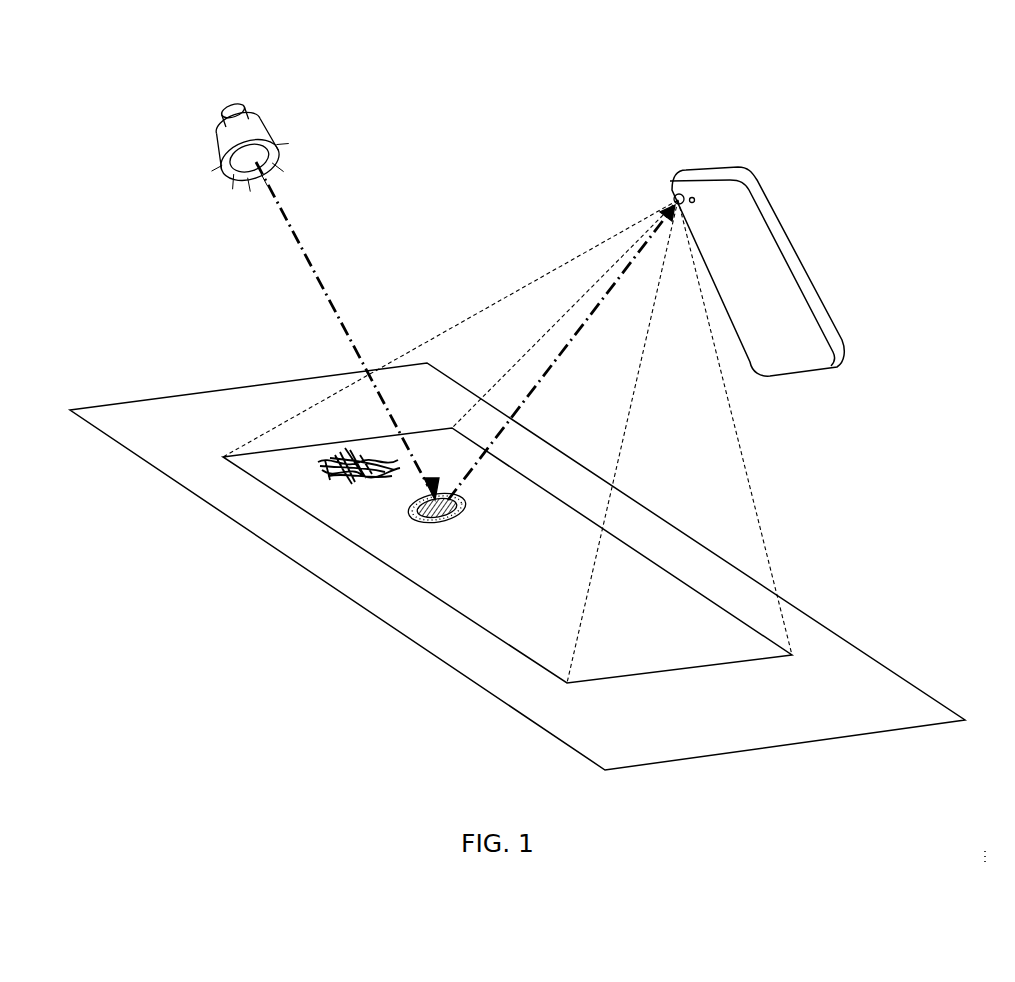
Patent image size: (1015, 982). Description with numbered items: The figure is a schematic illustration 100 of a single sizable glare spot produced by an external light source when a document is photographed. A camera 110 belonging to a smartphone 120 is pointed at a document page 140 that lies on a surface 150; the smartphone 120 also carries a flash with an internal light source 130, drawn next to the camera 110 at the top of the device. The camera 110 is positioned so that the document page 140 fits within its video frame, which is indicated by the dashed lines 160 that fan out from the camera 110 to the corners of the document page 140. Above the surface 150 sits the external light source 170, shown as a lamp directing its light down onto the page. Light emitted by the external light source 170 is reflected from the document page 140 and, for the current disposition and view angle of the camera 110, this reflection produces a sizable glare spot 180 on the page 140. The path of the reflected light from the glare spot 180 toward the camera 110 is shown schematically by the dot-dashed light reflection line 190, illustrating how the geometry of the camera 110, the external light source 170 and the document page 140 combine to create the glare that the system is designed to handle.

The schematic illustration 100 is at (968, 128).
The camera 110 is at (675, 193).
The smartphone 120 is at (792, 242).
The internal light source 130 is at (692, 197).
The document page 140 is at (627, 558).
The surface 150 is at (275, 395).
The dashed lines 160 is at (578, 250).
The external light source 170 is at (212, 138).
The glare spot 180 is at (425, 528).
The light reflection line 190 is at (567, 340).